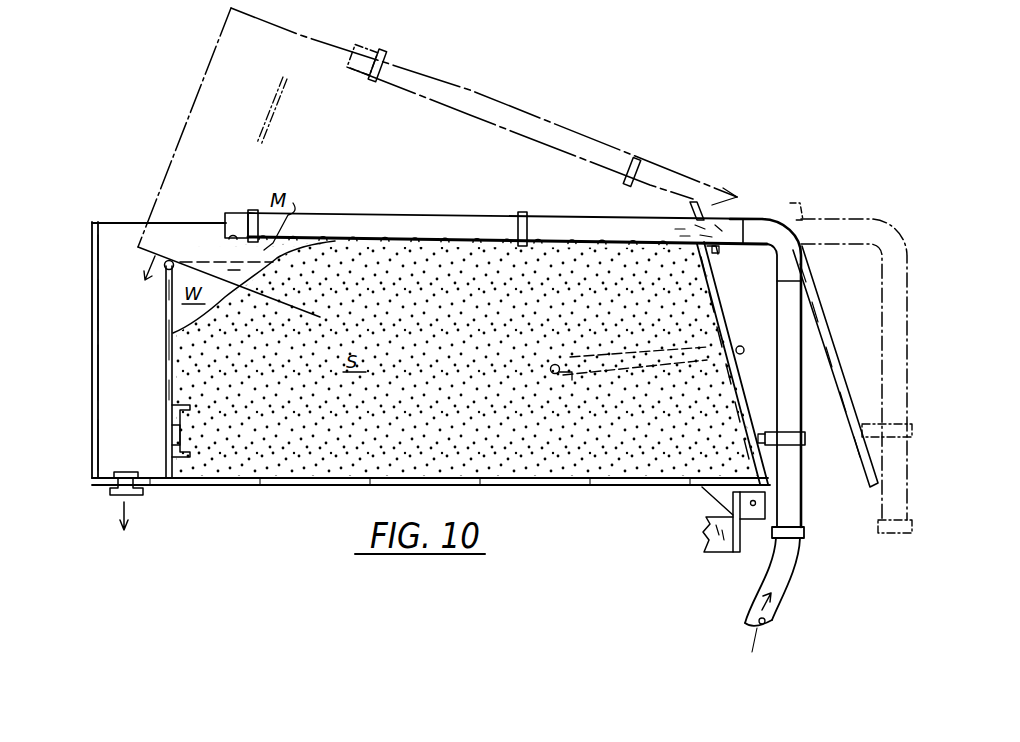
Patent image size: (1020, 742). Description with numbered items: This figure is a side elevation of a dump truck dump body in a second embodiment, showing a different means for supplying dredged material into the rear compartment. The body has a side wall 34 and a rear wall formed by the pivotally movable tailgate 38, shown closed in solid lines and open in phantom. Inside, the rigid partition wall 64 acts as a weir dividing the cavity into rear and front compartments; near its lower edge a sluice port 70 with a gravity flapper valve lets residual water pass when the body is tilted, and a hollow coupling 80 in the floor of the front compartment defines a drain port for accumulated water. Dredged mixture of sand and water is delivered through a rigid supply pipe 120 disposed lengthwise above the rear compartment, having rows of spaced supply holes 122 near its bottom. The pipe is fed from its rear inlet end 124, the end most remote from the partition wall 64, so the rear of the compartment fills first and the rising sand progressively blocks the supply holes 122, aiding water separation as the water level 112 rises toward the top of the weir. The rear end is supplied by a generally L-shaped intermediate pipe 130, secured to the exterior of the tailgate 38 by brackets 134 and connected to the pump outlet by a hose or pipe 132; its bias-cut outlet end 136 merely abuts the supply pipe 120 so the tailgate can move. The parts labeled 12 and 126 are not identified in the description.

The vehicle frame bracket 12 is at (717, 553).
The side wall 34 is at (226, 23).
The rear tailgate 38 is at (727, 318).
The partition wall 64 is at (166, 358).
The sluice port 70 is at (170, 436).
The hollow coupling 80 is at (108, 483).
The water level 112 is at (200, 262).
The supply pipe 120 is at (473, 93).
The supply holes 122 is at (415, 235).
The rear inlet end 124 is at (723, 188).
The coupling 126 is at (355, 48).
The intermediate pipe 130 is at (801, 412).
The hose or pipe 132 is at (787, 572).
The brackets 134 is at (718, 254).
The outlet end 136 is at (745, 217).